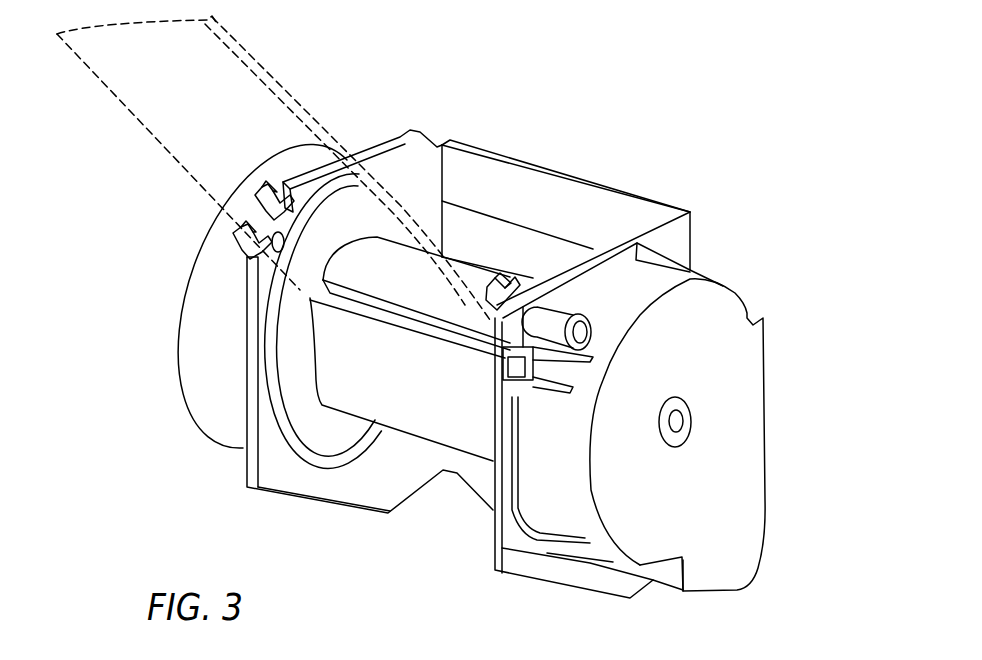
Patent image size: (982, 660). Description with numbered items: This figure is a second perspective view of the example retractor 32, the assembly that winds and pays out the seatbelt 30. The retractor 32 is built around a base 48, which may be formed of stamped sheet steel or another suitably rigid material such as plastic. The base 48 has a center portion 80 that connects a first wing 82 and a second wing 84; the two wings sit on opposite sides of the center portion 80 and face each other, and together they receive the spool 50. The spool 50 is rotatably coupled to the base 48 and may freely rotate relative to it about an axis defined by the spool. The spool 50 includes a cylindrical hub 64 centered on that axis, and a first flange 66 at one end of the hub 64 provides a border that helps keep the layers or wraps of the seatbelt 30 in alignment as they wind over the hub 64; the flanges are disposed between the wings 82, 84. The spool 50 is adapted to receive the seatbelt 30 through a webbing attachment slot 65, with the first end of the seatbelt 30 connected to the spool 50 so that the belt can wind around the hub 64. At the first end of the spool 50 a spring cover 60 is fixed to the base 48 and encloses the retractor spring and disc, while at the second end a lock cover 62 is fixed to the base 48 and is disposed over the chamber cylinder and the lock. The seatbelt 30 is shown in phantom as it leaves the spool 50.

The seatbelt 30 is at (277, 72).
The retractor 32 is at (703, 121).
The base 48 is at (510, 152).
The spool 50 is at (312, 473).
The spring cover 60 is at (176, 348).
The lock cover 62 is at (768, 400).
The hub 64 is at (383, 427).
The webbing attachment slot 65 is at (378, 313).
The first flange 66 is at (298, 466).
The center portion 80 is at (614, 188).
The first wing 82 is at (352, 145).
The second wing 84 is at (493, 548).